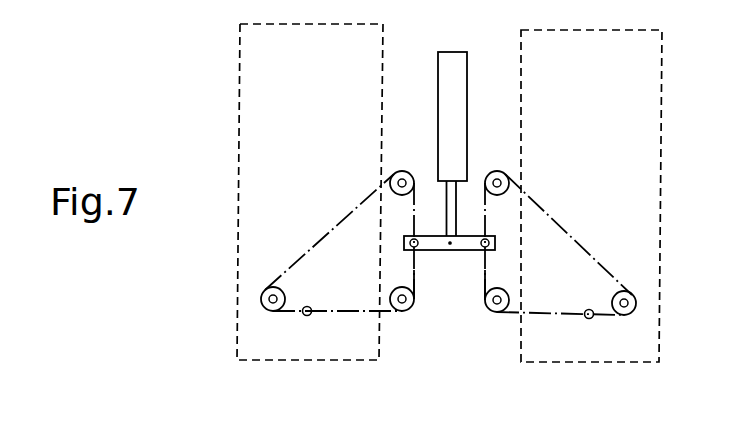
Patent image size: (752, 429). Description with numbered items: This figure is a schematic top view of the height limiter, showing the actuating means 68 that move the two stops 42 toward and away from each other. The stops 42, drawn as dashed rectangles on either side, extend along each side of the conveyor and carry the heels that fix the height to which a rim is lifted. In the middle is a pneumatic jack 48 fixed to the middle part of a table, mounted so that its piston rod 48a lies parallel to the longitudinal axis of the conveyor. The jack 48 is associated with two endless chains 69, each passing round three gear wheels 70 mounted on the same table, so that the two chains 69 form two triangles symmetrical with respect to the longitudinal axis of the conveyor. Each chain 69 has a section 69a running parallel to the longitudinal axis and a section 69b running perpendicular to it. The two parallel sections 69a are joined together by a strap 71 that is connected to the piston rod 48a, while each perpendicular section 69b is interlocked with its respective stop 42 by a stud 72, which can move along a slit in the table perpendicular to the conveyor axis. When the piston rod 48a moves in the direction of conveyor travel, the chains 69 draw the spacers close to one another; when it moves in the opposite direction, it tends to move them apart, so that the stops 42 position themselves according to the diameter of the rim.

The stop 42 is at (252, 108).
The pneumatic jack 48 is at (456, 104).
The piston rod 48a is at (452, 212).
The actuating means 68 is at (442, 346).
The endless chain 69 is at (338, 225).
The chain section parallel to longitudinal axis 69a is at (482, 287).
The chain section perpendicular to longitudinal axis 69b is at (330, 312).
The gear wheel 70 is at (402, 172).
The strap 71 is at (427, 243).
The stud 72 is at (306, 316).